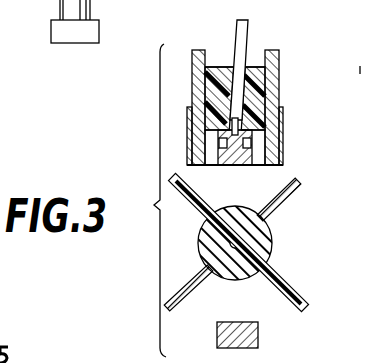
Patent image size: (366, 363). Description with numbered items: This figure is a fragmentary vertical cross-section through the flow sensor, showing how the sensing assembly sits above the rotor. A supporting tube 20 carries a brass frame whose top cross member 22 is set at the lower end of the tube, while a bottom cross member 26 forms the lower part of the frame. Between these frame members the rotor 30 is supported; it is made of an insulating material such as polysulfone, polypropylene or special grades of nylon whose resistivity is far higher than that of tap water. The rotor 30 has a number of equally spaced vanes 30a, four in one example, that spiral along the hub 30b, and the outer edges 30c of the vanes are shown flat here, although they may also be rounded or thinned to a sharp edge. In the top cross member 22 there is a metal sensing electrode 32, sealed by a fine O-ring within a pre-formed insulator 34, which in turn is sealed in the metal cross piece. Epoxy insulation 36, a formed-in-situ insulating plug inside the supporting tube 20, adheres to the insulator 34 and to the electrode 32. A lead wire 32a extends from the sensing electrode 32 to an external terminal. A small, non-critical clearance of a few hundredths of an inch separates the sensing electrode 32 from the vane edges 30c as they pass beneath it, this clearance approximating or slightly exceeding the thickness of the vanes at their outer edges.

The supporting tube 20 is at (192, 68).
The top cross member 22 is at (279, 140).
The bottom cross member 26 is at (247, 322).
The rotor 30 is at (280, 263).
The vanes 30a is at (186, 197).
The hub 30b is at (270, 226).
The outer edges 30c is at (166, 308).
The sensing electrode 32 is at (234, 160).
The lead wire 32a is at (237, 29).
The insulator 34 is at (268, 172).
The epoxy insulation 36 is at (258, 67).